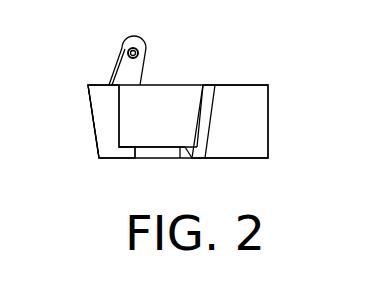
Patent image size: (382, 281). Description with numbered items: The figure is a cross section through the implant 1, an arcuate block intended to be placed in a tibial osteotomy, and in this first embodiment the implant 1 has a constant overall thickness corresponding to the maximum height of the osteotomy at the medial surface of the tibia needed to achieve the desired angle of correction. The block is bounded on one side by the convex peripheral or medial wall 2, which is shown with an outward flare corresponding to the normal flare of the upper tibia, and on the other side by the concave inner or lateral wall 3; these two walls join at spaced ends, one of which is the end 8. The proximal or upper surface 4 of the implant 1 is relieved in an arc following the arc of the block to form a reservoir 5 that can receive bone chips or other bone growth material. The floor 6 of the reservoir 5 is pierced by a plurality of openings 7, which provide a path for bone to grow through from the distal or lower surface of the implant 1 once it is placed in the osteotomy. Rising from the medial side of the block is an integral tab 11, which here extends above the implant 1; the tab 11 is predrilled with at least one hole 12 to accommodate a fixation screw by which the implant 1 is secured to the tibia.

The implant 1 is at (237, 66).
The medial wall 2 is at (97, 133).
The lateral wall 3 is at (212, 132).
The proximal surface 4 is at (99, 86).
The reservoir 5 is at (155, 95).
The floor 6 is at (121, 145).
The openings 7 is at (155, 153).
The end 8 is at (268, 118).
The tab 11 is at (146, 50).
The hole 12 is at (121, 48).